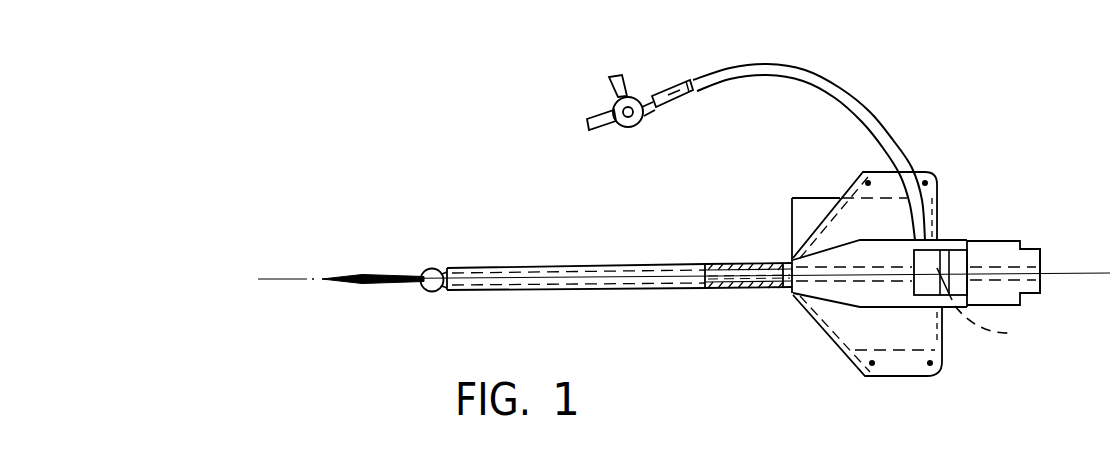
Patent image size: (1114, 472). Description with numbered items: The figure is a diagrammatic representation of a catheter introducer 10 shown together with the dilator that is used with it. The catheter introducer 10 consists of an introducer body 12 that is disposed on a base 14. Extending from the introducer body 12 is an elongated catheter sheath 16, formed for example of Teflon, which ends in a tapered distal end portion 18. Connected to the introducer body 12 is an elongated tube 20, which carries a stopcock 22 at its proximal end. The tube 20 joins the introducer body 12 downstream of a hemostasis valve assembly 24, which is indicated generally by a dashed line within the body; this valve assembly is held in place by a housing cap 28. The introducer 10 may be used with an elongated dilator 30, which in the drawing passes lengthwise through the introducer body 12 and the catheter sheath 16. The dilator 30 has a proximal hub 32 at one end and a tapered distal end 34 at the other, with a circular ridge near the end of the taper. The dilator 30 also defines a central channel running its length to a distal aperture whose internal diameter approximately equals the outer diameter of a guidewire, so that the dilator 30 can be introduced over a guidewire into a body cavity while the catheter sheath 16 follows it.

The catheter introducer 10 is at (984, 90).
The introducer body 12 is at (955, 243).
The base 14 is at (928, 170).
The catheter sheath 16 is at (733, 262).
The tapered distal end portion 18 is at (455, 266).
The elongated tube 20 is at (855, 93).
The stopcock 22 is at (632, 96).
The hemostasis valve assembly 24 is at (996, 312).
The housing cap 28 is at (958, 258).
The dilator 30 is at (600, 284).
The proximal hub 32 is at (1021, 255).
The tapered distal end 34 is at (375, 284).